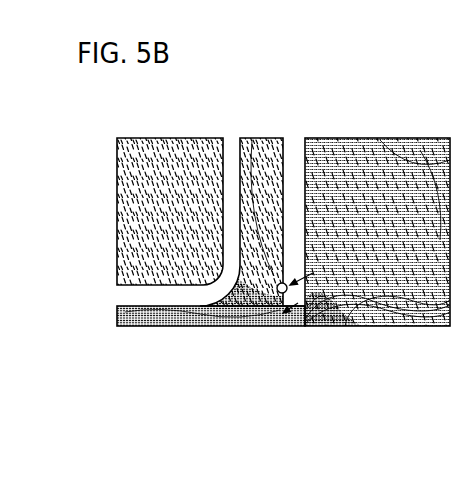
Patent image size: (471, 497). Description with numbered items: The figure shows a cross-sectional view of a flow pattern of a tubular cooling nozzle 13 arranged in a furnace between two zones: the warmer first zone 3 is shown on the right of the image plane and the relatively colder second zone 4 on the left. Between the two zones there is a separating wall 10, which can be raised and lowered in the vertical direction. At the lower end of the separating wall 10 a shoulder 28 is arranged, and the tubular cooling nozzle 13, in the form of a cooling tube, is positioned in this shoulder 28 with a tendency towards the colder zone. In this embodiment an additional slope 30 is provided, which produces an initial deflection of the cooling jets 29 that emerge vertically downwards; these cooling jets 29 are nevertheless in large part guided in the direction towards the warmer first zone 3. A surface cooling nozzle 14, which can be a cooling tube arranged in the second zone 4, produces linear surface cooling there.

The first zone 3 is at (419, 156).
The second zone 4 is at (172, 162).
The separating wall 10 is at (293, 163).
The tubular cooling nozzle 13 is at (254, 178).
The surface cooling nozzle 14 is at (143, 303).
The shoulder 28 is at (322, 305).
The cooling jet 29 is at (279, 294).
The additional slope 30 is at (289, 314).